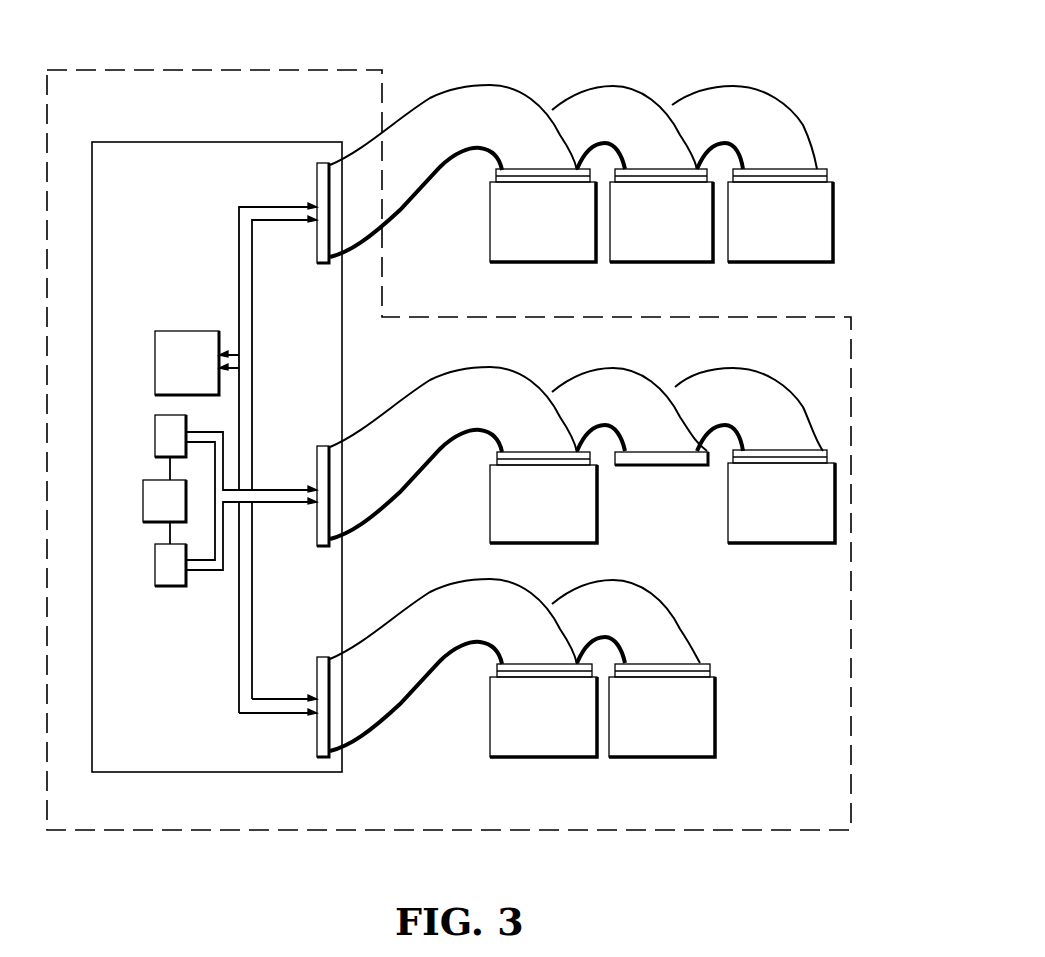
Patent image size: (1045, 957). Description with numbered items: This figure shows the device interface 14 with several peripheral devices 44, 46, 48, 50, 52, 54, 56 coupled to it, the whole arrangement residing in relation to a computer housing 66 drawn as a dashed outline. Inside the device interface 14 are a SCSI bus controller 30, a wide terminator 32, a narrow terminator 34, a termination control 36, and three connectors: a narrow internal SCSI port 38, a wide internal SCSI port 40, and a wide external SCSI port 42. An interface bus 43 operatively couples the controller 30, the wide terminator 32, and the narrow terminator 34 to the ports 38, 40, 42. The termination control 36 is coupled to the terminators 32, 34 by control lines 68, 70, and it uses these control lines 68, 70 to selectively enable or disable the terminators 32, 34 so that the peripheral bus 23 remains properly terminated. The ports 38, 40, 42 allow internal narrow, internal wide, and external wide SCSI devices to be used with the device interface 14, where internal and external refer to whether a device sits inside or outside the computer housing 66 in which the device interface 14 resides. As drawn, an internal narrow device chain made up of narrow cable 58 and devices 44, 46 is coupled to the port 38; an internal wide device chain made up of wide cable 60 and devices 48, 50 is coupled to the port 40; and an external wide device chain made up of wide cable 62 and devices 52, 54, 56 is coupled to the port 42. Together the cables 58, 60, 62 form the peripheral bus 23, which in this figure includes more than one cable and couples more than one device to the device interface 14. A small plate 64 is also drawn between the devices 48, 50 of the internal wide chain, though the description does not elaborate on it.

The device interface 14 is at (193, 773).
The peripheral bus 23 is at (650, 72).
The SCSI bus controller 30 is at (155, 331).
The wide terminator 32 is at (163, 415).
The narrow terminator 34 is at (155, 572).
The termination control 36 is at (142, 510).
The narrow internal SCSI connector 38 is at (318, 690).
The wide internal SCSI connector 40 is at (317, 483).
The wide external SCSI connector 42 is at (317, 197).
The interface bus 43 is at (239, 288).
The peripheral device 44 is at (500, 757).
The peripheral device 46 is at (637, 757).
The peripheral device 48 is at (517, 543).
The peripheral device 50 is at (748, 543).
The peripheral device 52 is at (577, 262).
The peripheral device 54 is at (618, 262).
The peripheral device 56 is at (750, 262).
The narrow cable 58 is at (397, 707).
The wide cable 60 is at (395, 493).
The wide cable 62 is at (390, 213).
The plate 64 is at (632, 465).
The computer housing 66 is at (852, 428).
The control line 68 is at (168, 467).
The control line 70 is at (168, 535).